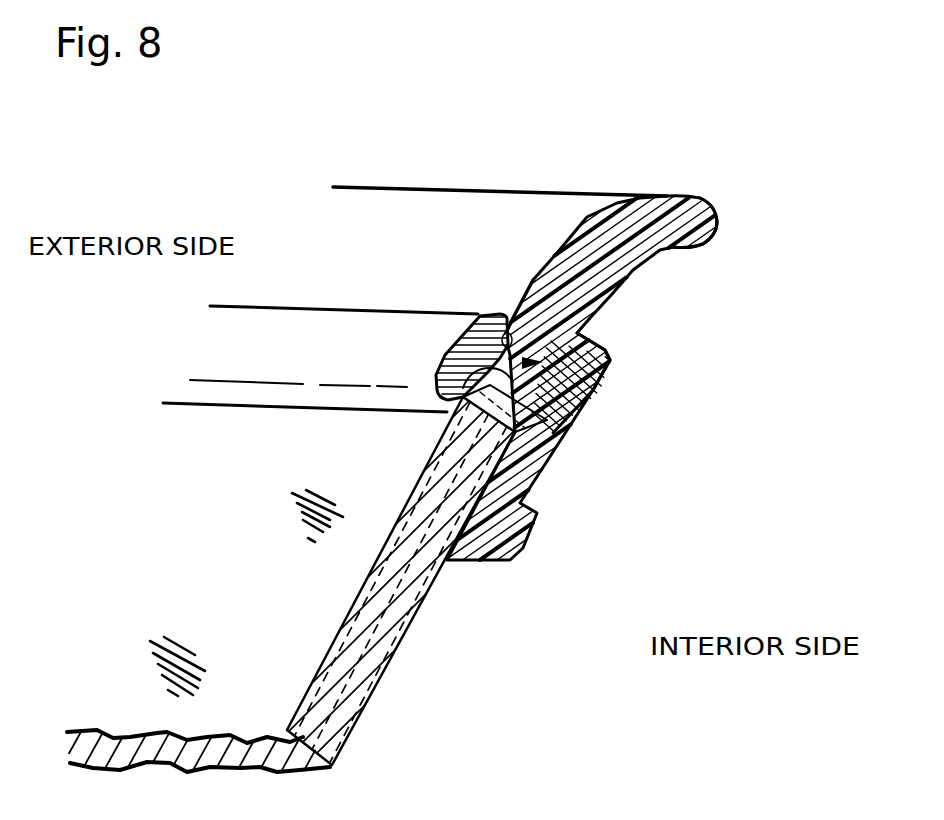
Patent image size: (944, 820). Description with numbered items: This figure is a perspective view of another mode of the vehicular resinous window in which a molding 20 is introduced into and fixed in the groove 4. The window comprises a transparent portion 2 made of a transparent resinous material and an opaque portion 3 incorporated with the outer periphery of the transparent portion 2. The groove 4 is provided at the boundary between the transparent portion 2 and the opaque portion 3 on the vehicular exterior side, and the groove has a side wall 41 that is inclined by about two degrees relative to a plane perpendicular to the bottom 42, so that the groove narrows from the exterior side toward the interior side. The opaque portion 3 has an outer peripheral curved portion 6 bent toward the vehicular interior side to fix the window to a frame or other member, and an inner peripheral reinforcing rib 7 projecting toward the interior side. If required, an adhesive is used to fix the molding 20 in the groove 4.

The transparent portion 2 is at (363, 653).
The opaque portion 3 is at (583, 296).
The groove 4 is at (595, 390).
The curved portion 6 is at (722, 220).
The reinforcing rib 7 is at (765, 250).
The molding 20 is at (363, 360).
The side wall 41 is at (517, 317).
The bottom 42 is at (435, 410).